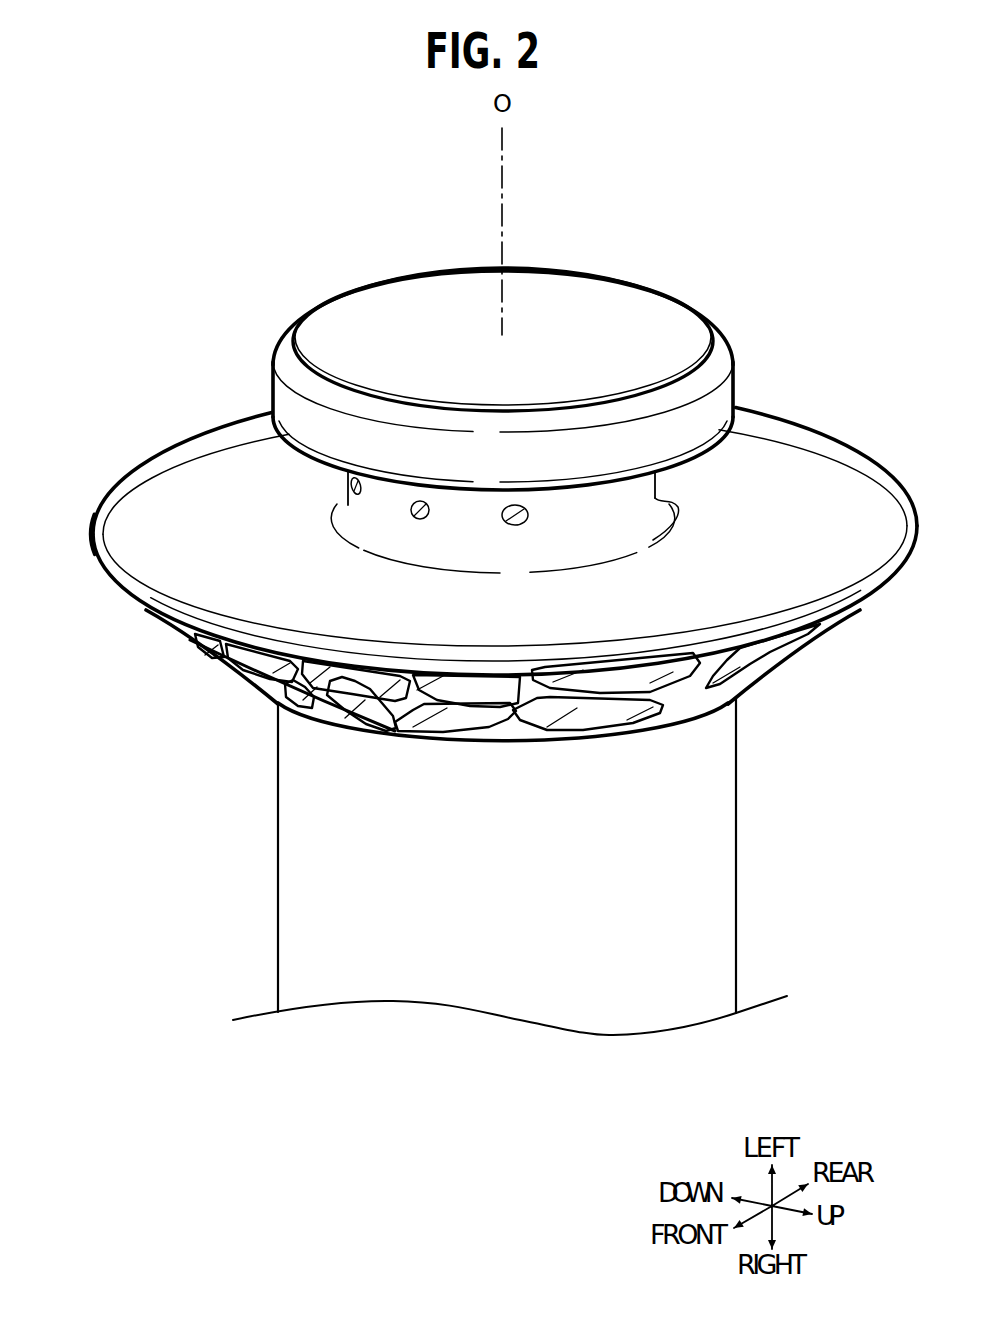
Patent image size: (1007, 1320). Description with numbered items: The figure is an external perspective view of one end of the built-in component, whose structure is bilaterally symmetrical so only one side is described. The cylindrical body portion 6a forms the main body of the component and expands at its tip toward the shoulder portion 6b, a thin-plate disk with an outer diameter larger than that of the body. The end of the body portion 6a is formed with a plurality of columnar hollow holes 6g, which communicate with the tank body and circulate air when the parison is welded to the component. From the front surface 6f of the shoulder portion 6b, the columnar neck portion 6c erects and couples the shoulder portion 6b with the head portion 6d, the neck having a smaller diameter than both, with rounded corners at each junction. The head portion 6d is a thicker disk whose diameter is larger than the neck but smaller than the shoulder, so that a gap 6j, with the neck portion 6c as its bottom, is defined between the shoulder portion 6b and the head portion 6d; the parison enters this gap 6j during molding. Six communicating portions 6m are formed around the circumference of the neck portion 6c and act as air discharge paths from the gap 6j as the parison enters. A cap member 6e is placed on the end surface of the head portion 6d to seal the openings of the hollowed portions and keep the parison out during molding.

The body portion 6a is at (737, 763).
The shoulder portion 6b is at (94, 539).
The neck portion 6c is at (656, 497).
The head portion 6d is at (721, 349).
The cap member 6e is at (623, 313).
The front surface 6f is at (823, 442).
The columnar hollow holes 6g is at (318, 706).
The gap 6j is at (278, 487).
The communicating portions 6m is at (513, 524).